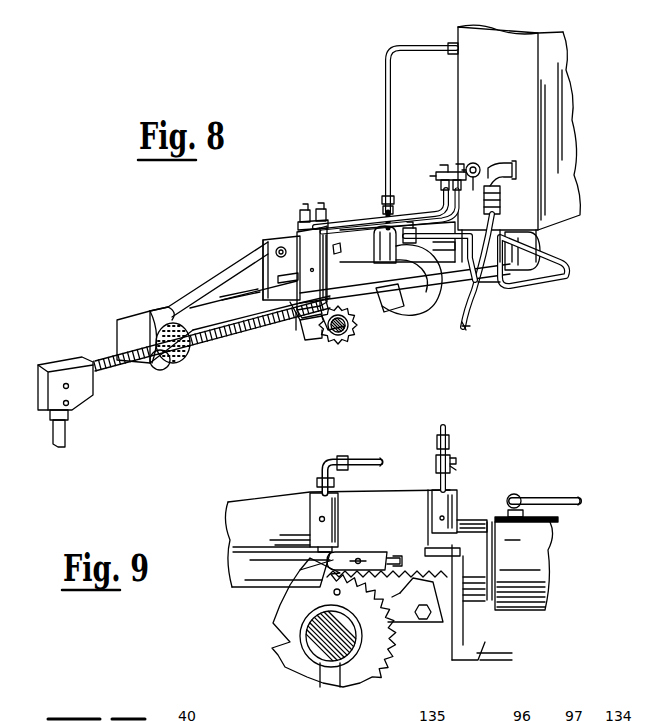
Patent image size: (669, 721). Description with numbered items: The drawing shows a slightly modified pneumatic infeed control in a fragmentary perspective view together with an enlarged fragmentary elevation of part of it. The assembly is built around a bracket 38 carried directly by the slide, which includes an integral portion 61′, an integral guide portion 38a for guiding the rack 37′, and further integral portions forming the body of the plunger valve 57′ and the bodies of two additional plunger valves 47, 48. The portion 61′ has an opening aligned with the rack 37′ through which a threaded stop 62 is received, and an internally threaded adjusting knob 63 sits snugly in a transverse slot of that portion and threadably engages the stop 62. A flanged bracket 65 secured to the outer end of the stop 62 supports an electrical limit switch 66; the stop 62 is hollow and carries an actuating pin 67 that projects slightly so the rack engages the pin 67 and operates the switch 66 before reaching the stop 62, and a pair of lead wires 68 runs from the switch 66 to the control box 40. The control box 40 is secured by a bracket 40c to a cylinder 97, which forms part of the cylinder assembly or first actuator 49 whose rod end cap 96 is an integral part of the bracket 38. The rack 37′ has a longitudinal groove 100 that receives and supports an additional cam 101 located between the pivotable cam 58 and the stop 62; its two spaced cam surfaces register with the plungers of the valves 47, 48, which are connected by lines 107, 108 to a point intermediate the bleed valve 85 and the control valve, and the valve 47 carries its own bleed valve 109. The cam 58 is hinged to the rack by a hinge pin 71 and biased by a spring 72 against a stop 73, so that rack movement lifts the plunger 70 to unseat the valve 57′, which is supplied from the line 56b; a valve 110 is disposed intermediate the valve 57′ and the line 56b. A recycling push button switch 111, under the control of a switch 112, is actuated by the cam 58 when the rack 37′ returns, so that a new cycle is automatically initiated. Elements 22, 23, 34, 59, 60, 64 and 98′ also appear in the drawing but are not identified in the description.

In FIG. 8, the control box 40 is at (527, 50).
In FIG. 8, the bracket 40c is at (488, 172).
In FIG. 8, the line 56b is at (386, 150).
In FIG. 9, the line 56b is at (448, 432).
In FIG. 8, the bleed valve 85 is at (440, 170).
In FIG. 8, the line 107 is at (471, 160).
In FIG. 8, the line 108 is at (445, 199).
In FIG. 9, the line 108 is at (362, 462).
In FIG. 8, the bracket 38 is at (240, 275).
In FIG. 8, the integral guide portion 38a is at (264, 238).
In FIG. 8, the plunger valve 47 is at (303, 210).
In FIG. 8, the plunger valve 48 is at (333, 222).
In FIG. 9, the plunger valve 48 is at (320, 500).
In FIG. 8, the valve 57′ is at (374, 228).
In FIG. 9, the valve 57′ is at (458, 497).
In FIG. 8, the integral portion 61′ is at (137, 318).
In FIG. 8, the electrical limit switch 66 is at (57, 357).
In FIG. 8, the flanged bracket 65 is at (82, 393).
In FIG. 8, the lead wires 68 is at (472, 323).
In FIG. 8, the bushing 64 is at (164, 370).
In FIG. 8, the adjusting knob 63 is at (186, 356).
In FIG. 8, the threaded stop 62 is at (237, 338).
In FIG. 8, the pin 67 is at (243, 325).
In FIG. 8, the bleed valve 109 is at (296, 332).
In FIG. 8, the cam 101 is at (325, 318).
In FIG. 9, the cam 101 is at (333, 560).
In FIG. 8, the hub 23 is at (337, 338).
In FIG. 9, the hub 23 is at (322, 663).
In FIG. 8, the shaft 22 is at (347, 335).
In FIG. 9, the shaft 22 is at (336, 662).
In FIG. 8, the gear 34 is at (356, 326).
In FIG. 9, the gear 34 is at (277, 650).
In FIG. 8, the rack 37′ is at (393, 308).
In FIG. 9, the rack 37′ is at (408, 553).
In FIG. 8, the clamp 98′ is at (410, 294).
In FIG. 8, the pipe handle 59 is at (450, 245).
In FIG. 9, the pipe handle 59 is at (553, 497).
In FIG. 8, the rod end cap 96 is at (462, 290).
In FIG. 8, the first actuator 49 is at (470, 330).
In FIG. 8, the cylinder 97 is at (498, 287).
In FIG. 9, the cylinder 97 is at (533, 604).
In FIG. 8, the tube loop 60 is at (548, 280).
In FIG. 9, the plunger 70 is at (430, 490).
In FIG. 9, the valve 110 is at (456, 468).
In FIG. 9, the longitudinal groove 100 is at (390, 552).
In FIG. 9, the spring 72 is at (387, 582).
In FIG. 9, the hinge pin 71 is at (428, 585).
In FIG. 9, the stop 73 is at (404, 592).
In FIG. 9, the cam 58 is at (445, 610).
In FIG. 9, the recycling switch 111 is at (468, 580).
In FIG. 9, the switch 112 is at (478, 661).